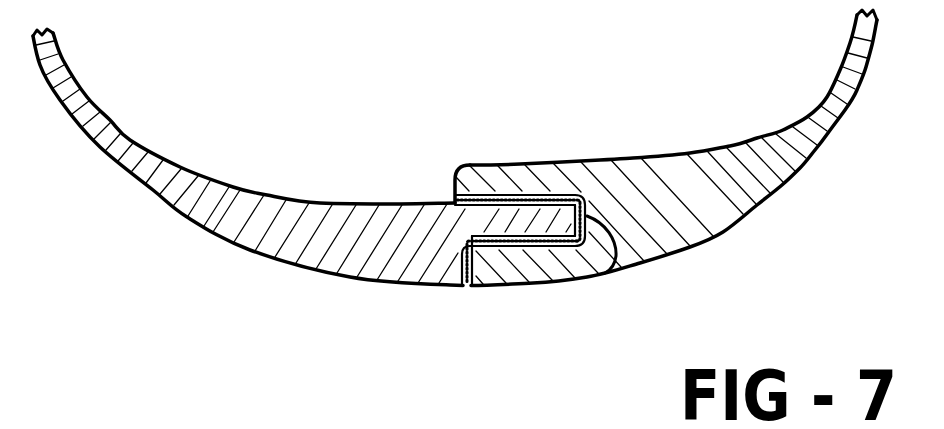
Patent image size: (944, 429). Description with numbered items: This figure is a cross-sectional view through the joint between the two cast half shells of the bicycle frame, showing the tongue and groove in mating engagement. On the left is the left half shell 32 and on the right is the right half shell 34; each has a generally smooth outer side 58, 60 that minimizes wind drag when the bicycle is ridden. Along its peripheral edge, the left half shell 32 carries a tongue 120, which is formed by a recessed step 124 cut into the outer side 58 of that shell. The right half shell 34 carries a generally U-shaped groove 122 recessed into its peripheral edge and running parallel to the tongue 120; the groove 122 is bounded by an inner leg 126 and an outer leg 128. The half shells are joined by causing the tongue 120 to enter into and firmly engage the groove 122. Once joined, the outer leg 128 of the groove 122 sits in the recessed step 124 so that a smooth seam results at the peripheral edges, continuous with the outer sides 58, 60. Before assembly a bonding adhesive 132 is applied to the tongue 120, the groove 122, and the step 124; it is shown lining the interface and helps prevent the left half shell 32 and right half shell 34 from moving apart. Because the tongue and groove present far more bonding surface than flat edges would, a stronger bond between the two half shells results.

The left half shell 32 is at (178, 176).
The right half shell 34 is at (748, 163).
The outer side 58 is at (262, 250).
The outer side 60 is at (708, 241).
The tongue 120 is at (498, 217).
The groove 122 is at (610, 263).
The recessed step 124 is at (456, 268).
The inner leg 126 is at (535, 177).
The outer leg 128 is at (528, 268).
The bonding adhesive 132 is at (463, 285).